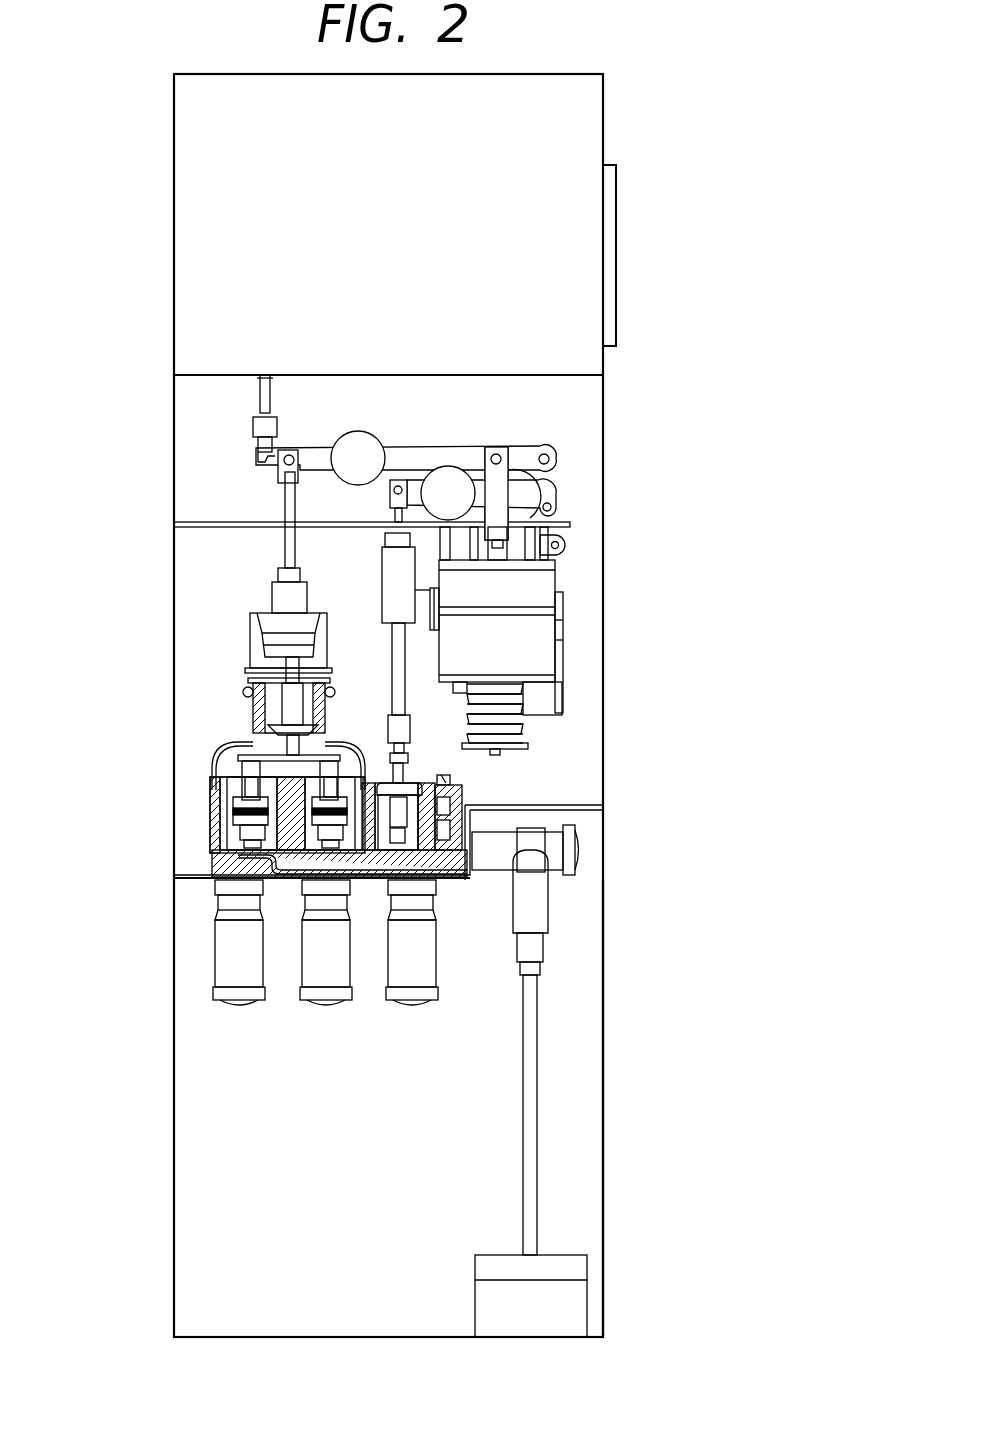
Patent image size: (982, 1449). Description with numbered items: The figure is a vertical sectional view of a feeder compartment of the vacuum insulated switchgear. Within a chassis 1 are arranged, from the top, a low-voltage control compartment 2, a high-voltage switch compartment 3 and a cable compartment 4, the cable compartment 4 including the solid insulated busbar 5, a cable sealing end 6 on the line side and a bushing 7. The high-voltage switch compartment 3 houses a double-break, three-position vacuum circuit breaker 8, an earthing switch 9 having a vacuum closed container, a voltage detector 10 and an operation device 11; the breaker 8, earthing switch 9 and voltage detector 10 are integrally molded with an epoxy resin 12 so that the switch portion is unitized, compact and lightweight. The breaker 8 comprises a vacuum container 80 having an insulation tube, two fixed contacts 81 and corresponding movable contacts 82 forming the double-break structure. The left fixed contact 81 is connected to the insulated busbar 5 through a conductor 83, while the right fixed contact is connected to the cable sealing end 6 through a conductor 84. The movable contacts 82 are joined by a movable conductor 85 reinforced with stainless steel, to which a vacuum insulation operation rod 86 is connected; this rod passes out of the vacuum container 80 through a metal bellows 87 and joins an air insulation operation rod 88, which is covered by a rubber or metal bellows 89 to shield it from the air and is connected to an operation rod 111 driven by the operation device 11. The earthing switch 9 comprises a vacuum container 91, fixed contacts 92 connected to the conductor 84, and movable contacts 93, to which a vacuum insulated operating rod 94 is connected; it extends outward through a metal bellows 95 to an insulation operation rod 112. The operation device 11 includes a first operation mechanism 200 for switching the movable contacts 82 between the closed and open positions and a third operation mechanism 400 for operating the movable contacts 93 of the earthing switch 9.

The chassis 1 is at (614, 148).
The low-voltage control compartment 2 is at (580, 278).
The high-voltage switch compartment 3 is at (582, 400).
The cable compartment 4 is at (588, 1027).
The insulated busbar 5 is at (216, 955).
The cable sealing end 6 is at (580, 850).
The bushing 7 is at (573, 1297).
The double-break, three-position vacuum circuit breaker 8 is at (196, 822).
The earthing switch 9 is at (432, 776).
The voltage detector 10 is at (468, 792).
The operation device 11 is at (579, 569).
The epoxy resin 12 is at (226, 794).
The vacuum container 80 is at (217, 768).
The fixed contacts 81 is at (210, 843).
The movable contacts 82 is at (224, 788).
The conductor 83 is at (217, 865).
The conductor 84 is at (452, 880).
The movable conductor 85 is at (248, 748).
The vacuum insulation operation rod 86 is at (255, 718).
The metal bellows 87 is at (250, 690).
The air insulation operation rod 88 is at (252, 621).
The bellows 89 is at (250, 650).
The vacuum container 91 is at (362, 872).
The fixed contacts 92 is at (381, 872).
The movable contacts 93 is at (416, 882).
The vacuum insulated operating rod 94 is at (388, 780).
The metal bellows 95 is at (370, 832).
The operation rod 111 is at (289, 549).
The insulation operation rod 112 is at (384, 632).
The first operation mechanism 200 is at (562, 650).
The third operation mechanism 400 is at (567, 612).